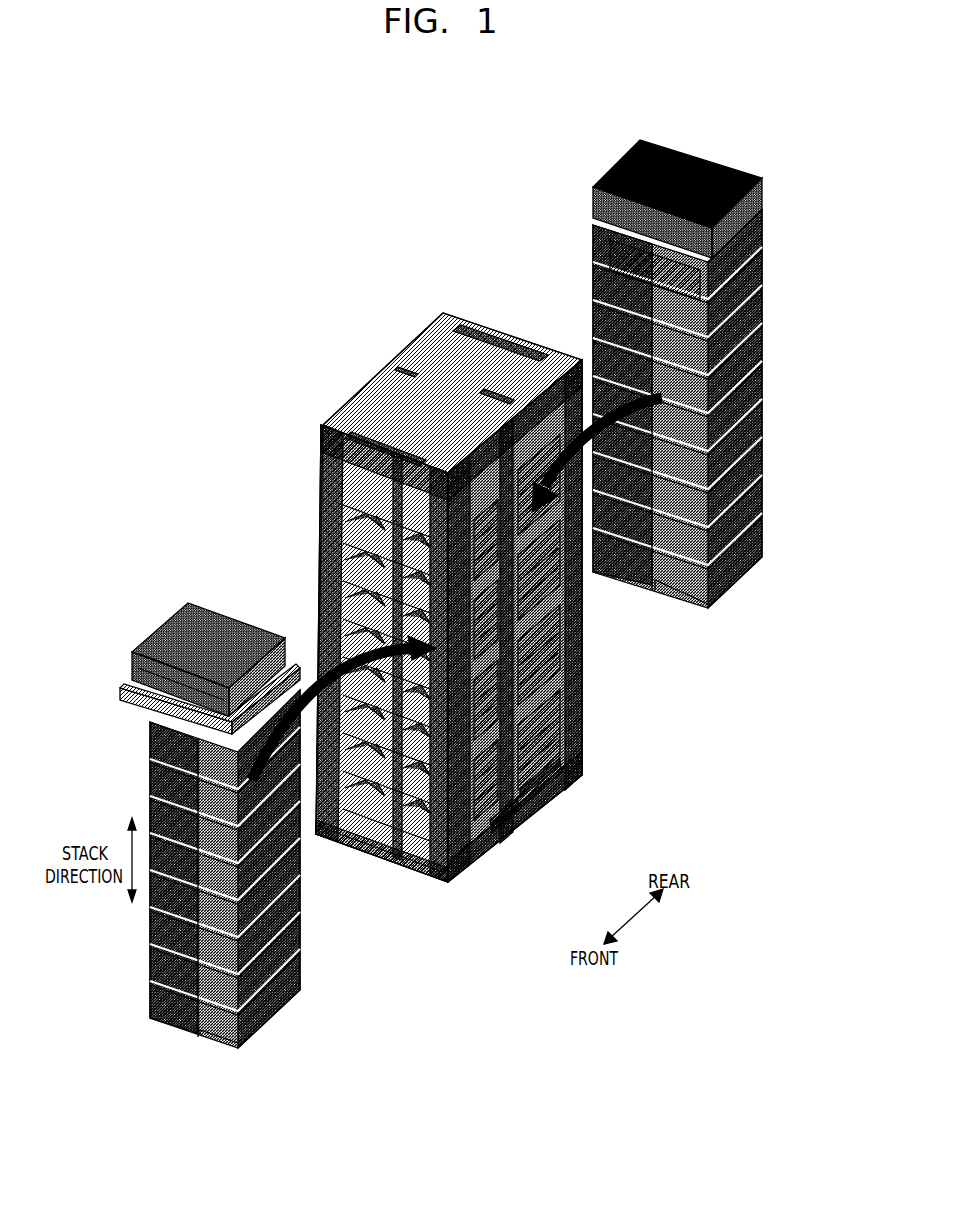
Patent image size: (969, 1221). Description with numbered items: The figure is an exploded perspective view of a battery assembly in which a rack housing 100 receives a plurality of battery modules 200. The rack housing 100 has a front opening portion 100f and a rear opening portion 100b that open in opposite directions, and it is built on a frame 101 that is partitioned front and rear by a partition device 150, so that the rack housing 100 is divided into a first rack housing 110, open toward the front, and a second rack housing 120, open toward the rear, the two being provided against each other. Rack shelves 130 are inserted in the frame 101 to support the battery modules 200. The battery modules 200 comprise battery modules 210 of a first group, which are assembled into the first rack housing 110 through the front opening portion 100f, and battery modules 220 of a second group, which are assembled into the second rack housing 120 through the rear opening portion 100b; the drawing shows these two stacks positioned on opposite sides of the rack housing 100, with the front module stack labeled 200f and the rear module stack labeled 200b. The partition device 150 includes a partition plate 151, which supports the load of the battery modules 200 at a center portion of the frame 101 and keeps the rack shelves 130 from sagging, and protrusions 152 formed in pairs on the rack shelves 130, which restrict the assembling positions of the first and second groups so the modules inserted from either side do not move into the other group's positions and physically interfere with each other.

The rack housing 100 is at (491, 615).
The frame 101 is at (392, 360).
The rear opening portion 100b is at (577, 648).
The front opening portion 100f is at (401, 886).
The first rack housing 110 is at (499, 860).
The second rack housing 120 is at (564, 800).
The rack shelves 130 is at (433, 878).
The partition device 150 is at (539, 822).
The partition plate 151 is at (543, 800).
The protrusions 152 is at (518, 834).
The battery modules 200 is at (231, 794).
The front battery module 200f is at (231, 858).
The rear battery module 200b is at (707, 340).
The battery modules of the first group 210 is at (311, 1001).
The battery modules of the second group 220 is at (698, 144).